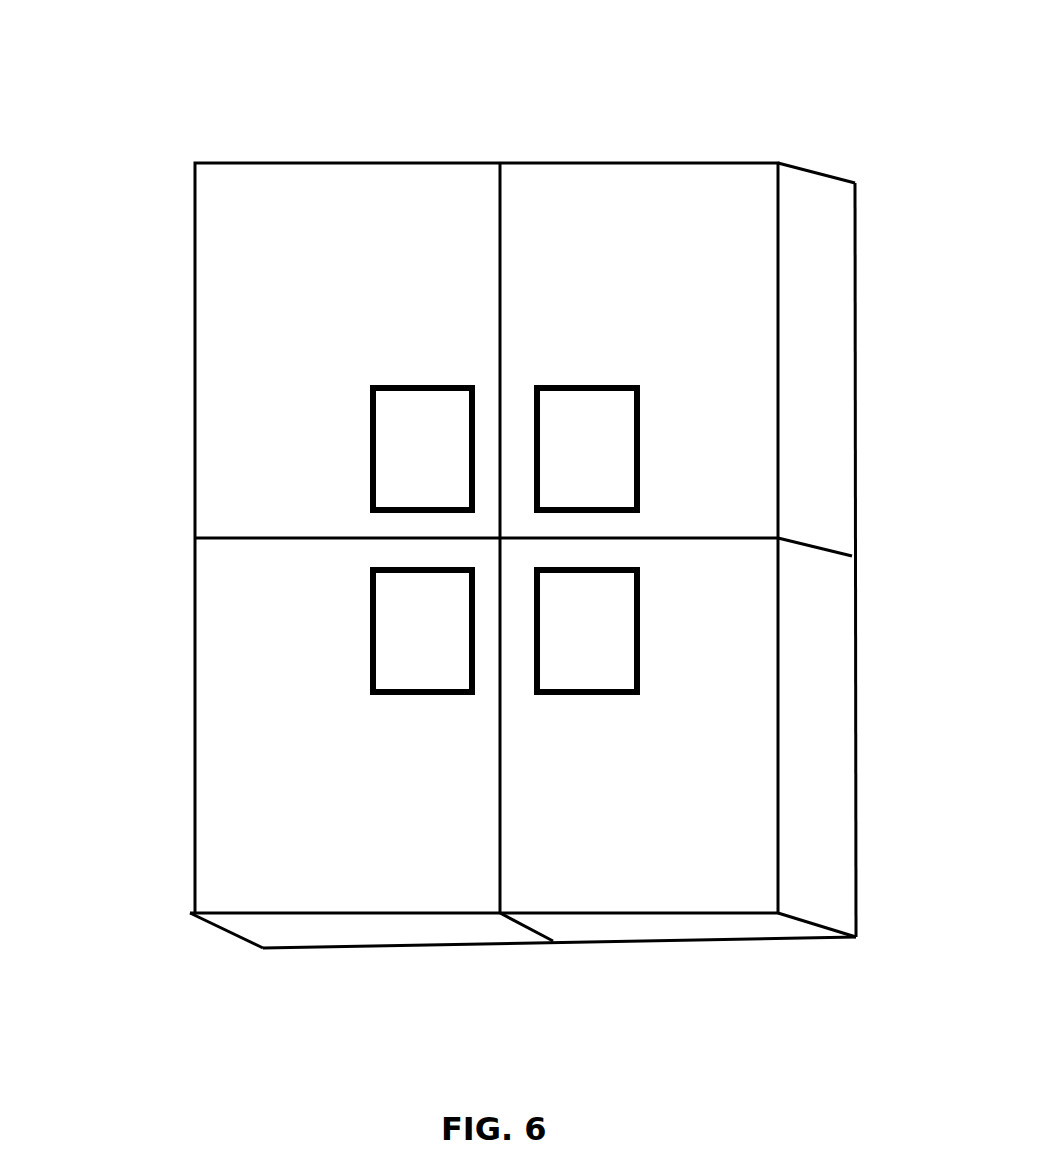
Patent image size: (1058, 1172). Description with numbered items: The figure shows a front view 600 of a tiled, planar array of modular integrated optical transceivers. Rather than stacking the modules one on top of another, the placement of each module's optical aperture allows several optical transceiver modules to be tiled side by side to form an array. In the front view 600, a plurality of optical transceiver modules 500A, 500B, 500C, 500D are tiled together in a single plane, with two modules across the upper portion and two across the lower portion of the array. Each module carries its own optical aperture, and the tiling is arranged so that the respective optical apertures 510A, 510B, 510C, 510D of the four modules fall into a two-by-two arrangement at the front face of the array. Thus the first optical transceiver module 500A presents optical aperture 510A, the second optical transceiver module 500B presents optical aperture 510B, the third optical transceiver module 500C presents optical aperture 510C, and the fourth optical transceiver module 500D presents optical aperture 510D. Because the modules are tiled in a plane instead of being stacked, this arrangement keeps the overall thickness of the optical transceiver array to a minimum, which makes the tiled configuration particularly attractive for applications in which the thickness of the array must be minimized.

The front view 600 is at (155, 167).
The optical transceiver module 500A is at (272, 163).
The optical transceiver module 500B is at (705, 163).
The optical transceiver module 500C is at (837, 676).
The optical transceiver module 500D is at (327, 950).
The optical aperture 510A is at (402, 415).
The optical aperture 510B is at (618, 441).
The optical aperture 510C is at (583, 673).
The optical aperture 510D is at (370, 660).